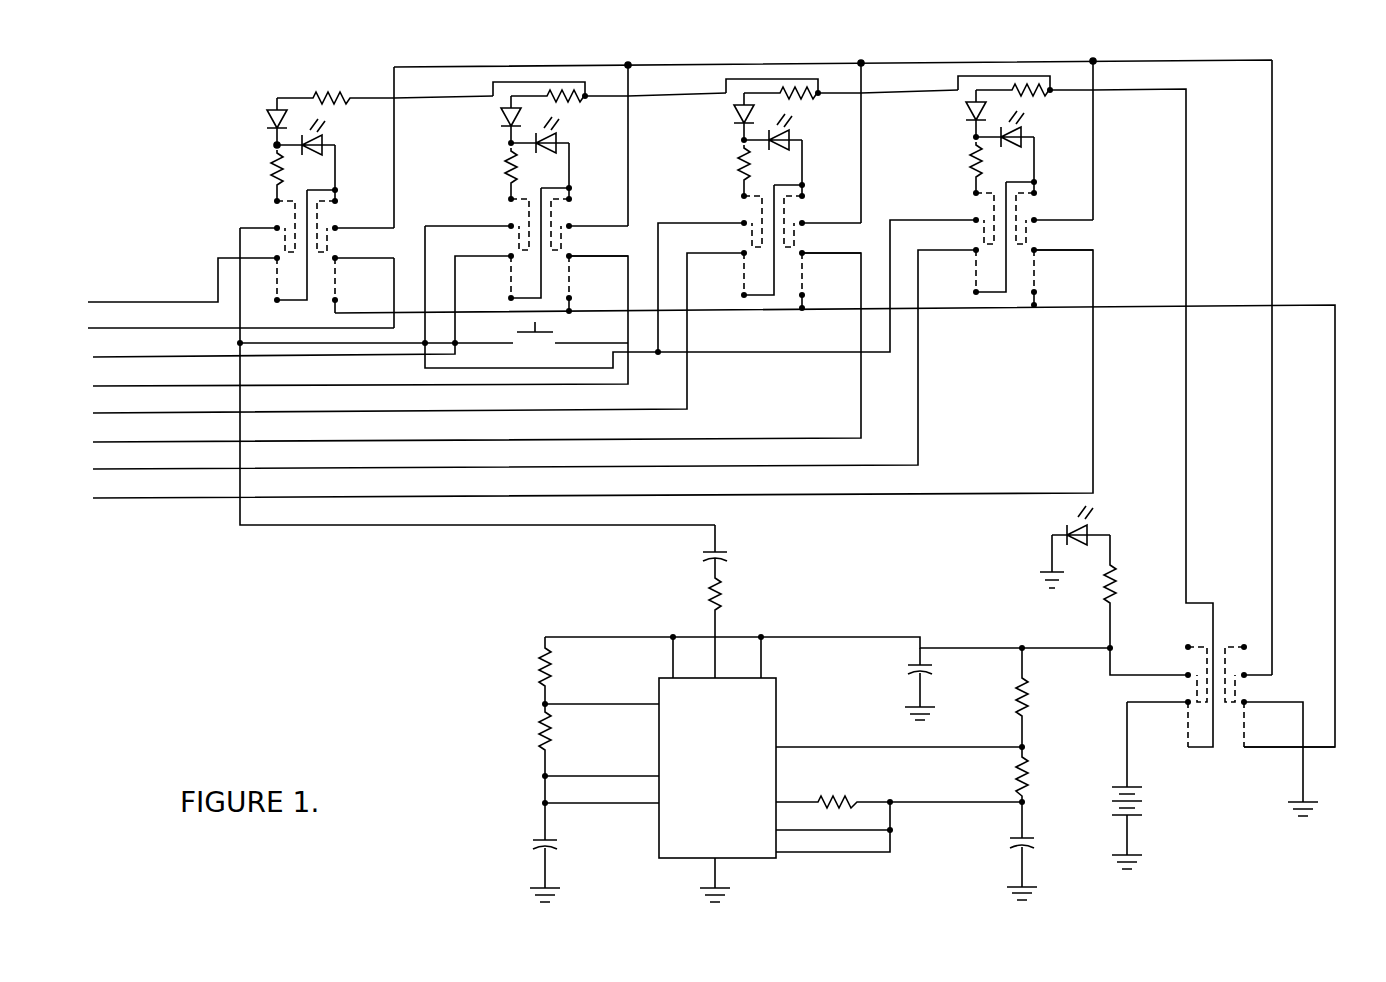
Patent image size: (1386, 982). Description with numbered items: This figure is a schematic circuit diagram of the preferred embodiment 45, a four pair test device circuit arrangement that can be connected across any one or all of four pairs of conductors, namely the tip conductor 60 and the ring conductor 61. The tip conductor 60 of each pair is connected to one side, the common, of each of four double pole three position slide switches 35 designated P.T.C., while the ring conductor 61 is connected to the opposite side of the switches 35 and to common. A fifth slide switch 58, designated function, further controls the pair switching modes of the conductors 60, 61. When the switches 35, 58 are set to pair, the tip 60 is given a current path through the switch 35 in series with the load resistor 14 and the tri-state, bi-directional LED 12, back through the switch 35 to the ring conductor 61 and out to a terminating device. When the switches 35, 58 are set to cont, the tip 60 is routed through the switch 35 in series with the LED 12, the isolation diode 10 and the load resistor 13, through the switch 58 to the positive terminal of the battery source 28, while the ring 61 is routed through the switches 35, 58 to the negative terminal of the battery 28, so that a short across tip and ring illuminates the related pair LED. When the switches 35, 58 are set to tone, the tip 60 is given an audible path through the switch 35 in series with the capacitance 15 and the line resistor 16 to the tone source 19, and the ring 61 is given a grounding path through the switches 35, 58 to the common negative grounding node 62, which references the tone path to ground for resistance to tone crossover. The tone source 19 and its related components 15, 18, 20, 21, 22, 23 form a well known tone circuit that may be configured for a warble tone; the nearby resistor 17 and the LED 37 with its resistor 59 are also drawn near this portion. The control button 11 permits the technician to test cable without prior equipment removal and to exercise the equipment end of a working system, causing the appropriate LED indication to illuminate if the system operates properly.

The isolation diode 10 is at (262, 117).
The control button 11 is at (533, 348).
The tri-state, bi-directional LED 12 is at (327, 141).
The load resistor 13 is at (332, 92).
The load resistor 14 is at (268, 171).
The capacitance 15 is at (735, 555).
The line resistor 16 is at (730, 600).
The resistor 17 is at (535, 668).
The tone source related component 18 is at (537, 738).
The tone source 19 is at (782, 683).
The tone source related component 20 is at (845, 795).
The tone source related component 21 is at (533, 845).
The tone source related component 22 is at (902, 677).
The tone source related component 23 is at (1040, 685).
The battery source 28 is at (1108, 797).
The double pole three position slide switch 35 is at (604, 194).
The light emitting diode 37 is at (1093, 522).
The four pair test device circuit arrangement 45 is at (370, 577).
The function slide switch 58 is at (1230, 745).
The resistor 59 is at (1125, 584).
The tip conductor 60 is at (105, 300).
The ring conductor 61 is at (103, 330).
The common negative grounding node 62 is at (1045, 578).